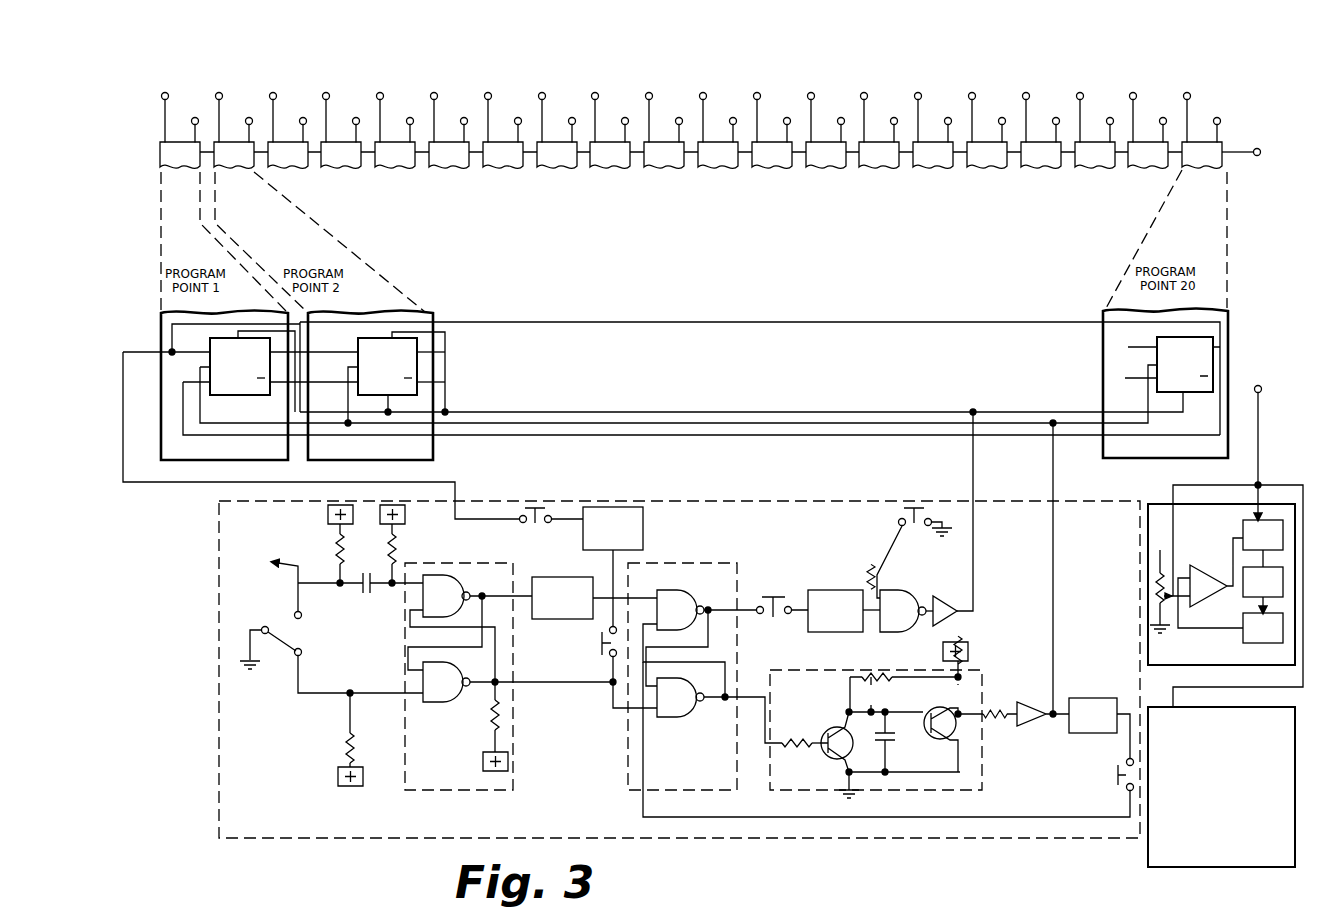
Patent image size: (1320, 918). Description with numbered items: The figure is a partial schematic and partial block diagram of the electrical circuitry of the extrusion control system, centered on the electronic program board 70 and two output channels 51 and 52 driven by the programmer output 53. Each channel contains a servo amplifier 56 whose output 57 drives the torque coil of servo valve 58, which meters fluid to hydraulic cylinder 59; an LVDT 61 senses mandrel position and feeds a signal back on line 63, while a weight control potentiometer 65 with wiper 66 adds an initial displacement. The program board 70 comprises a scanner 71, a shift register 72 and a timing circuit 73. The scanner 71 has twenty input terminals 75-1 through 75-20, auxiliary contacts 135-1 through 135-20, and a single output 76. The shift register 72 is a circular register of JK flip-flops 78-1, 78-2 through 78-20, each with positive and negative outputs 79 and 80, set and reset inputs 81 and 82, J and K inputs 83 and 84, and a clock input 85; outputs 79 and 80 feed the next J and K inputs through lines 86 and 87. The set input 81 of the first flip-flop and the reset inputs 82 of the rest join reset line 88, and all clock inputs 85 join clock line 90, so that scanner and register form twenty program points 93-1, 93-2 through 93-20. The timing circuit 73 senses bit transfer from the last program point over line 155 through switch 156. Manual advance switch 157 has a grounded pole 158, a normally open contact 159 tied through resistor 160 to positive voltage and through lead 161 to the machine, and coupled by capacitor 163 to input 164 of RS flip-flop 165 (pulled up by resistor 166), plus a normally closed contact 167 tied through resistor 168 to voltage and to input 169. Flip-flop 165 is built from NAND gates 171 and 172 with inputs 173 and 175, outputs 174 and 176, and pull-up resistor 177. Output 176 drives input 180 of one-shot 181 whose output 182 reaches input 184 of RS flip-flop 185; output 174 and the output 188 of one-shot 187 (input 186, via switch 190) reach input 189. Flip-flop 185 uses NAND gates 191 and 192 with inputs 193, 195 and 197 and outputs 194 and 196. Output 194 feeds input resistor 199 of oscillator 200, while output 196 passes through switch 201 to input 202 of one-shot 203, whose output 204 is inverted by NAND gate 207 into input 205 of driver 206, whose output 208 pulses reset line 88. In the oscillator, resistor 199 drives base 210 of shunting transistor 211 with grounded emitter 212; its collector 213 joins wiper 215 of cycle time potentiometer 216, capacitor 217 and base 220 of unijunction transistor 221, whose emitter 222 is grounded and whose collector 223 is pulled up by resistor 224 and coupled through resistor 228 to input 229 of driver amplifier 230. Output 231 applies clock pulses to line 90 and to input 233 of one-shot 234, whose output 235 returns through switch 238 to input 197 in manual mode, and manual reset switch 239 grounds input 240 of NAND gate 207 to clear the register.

The channel 51 is at (1247, 670).
The channel 52 is at (1226, 869).
The output of the electronic programmer 53 is at (1262, 390).
The servo amplifier 56 is at (1207, 577).
The output of servo amplifier 57 is at (1238, 538).
The servo valve 58 is at (1253, 515).
The hydraulic cylinder 59 is at (1240, 590).
The linear motion transducer (LVDT) 61 is at (1240, 636).
The feedback line 63 is at (1208, 620).
The weight control variable potentiometer 65 is at (1146, 596).
The wiper 66 is at (1179, 575).
The electronic program board 70 is at (1245, 268).
The scanner 71 is at (705, 230).
The shift register 72 is at (697, 373).
The timing circuit 73 is at (768, 498).
The scanner input terminal 75-1 is at (192, 125).
The scanner input terminal 75-20 is at (1222, 120).
The scanner output 76 is at (1240, 149).
The flip-flop 78-1 is at (240, 366).
The flip-flop 78-2 is at (387, 366).
The flip-flop 78-20 is at (1220, 352).
The positive output 79 is at (431, 342).
The negative output 80 is at (430, 372).
The set input 81 is at (395, 336).
The reset input 82 is at (421, 402).
The J input 83 is at (350, 352).
The K input 84 is at (353, 386).
The clock input 85 is at (348, 367).
The line 86 is at (314, 325).
The line 87 is at (290, 404).
The reset line 88 is at (760, 400).
The clock line 90 is at (820, 400).
The program point 93-1 is at (158, 300).
The program point 93-2 is at (368, 270).
The program point 93-20 is at (1130, 245).
The auxiliary contact 135-1 is at (162, 99).
The auxiliary contact 135-20 is at (1191, 94).
The line 155 is at (905, 307).
The switch 156 is at (556, 510).
The manual advance switch 157 is at (300, 632).
The pole 158 is at (265, 622).
The normally open contact 159 is at (308, 616).
The resistor 160 is at (335, 547).
The lead 161 is at (287, 573).
The capacitor 163 is at (380, 563).
The input of RS flip-flop 164 is at (428, 567).
The RS flip-flop 165 is at (472, 561).
The resistor 166 is at (397, 548).
The normally closed contact 167 is at (303, 655).
The resistor 168 is at (346, 740).
The input of RS flip-flop 169 is at (423, 702).
The NAND gate 171 is at (446, 596).
The NAND gate 172 is at (446, 682).
The input 173 is at (410, 628).
The output of NAND gate 174 is at (470, 682).
The NAND gate input 175 is at (408, 670).
The output 176 is at (478, 594).
The resistor 177 is at (488, 723).
The input of one-shot multivibrator 180 is at (519, 592).
The one-shot multivibrator 181 is at (563, 598).
The output of one-shot 182 is at (595, 588).
The input of RS flip-flop 184 is at (647, 570).
The RS flip-flop 185 is at (702, 555).
The input of multivibrator 186 is at (556, 540).
The one-shot multivibrator 187 is at (613, 528).
The output of one-shot 188 is at (620, 545).
The input of flip-flop 189 is at (622, 712).
The switch 190 is at (600, 656).
The NAND gate 191 is at (680, 610).
The NAND gate 192 is at (680, 697).
The input 193 is at (653, 645).
The output of NAND gate 194 is at (702, 702).
The input 195 is at (668, 672).
The output of NAND gate 196 is at (710, 605).
The input 197 is at (658, 720).
The input resistor 199 is at (784, 750).
The oscillator 200 is at (783, 790).
The switch 201 is at (772, 595).
The input of one-shot multivibrator 202 is at (798, 614).
The one-shot multivibrator 203 is at (844, 611).
The output of one-shot 204 is at (870, 590).
The input of driver 205 is at (935, 595).
The driver 206 is at (949, 617).
The NAND gate 207 is at (907, 596).
The output of driver 208 is at (976, 585).
The base 210 is at (832, 730).
The transistor 211 is at (823, 780).
The emitter 212 is at (852, 752).
The collector 213 is at (843, 720).
The wiper 215 is at (876, 697).
The cycle time-setting potentiometer 216 is at (847, 672).
The capacitor 217 is at (889, 744).
The base 220 is at (926, 724).
The unijunction transistor 221 is at (953, 775).
The emitter 222 is at (966, 746).
The collector 223 is at (968, 742).
The resistor 224 is at (970, 690).
The resistor 228 is at (988, 703).
The input of driver amplifier 229 is at (1038, 708).
The driver amplifier 230 is at (1040, 740).
The output of amplifier 231 is at (1050, 725).
The input of one-shot multivibrator 233 is at (1068, 698).
The one-shot multivibrator 234 is at (1099, 728).
The output of one-shot 235 is at (1122, 762).
The switch 238 is at (1113, 788).
The manual reset switch 239 is at (897, 518).
The input of NAND gate 240 is at (870, 555).